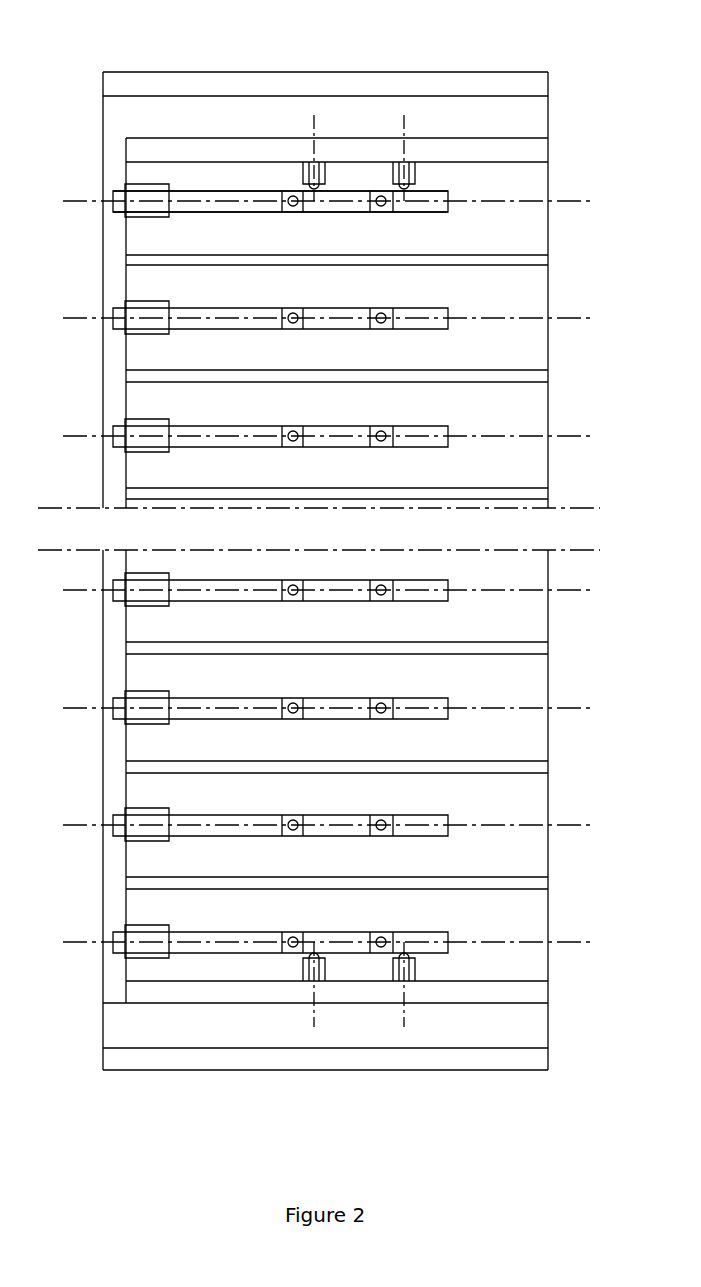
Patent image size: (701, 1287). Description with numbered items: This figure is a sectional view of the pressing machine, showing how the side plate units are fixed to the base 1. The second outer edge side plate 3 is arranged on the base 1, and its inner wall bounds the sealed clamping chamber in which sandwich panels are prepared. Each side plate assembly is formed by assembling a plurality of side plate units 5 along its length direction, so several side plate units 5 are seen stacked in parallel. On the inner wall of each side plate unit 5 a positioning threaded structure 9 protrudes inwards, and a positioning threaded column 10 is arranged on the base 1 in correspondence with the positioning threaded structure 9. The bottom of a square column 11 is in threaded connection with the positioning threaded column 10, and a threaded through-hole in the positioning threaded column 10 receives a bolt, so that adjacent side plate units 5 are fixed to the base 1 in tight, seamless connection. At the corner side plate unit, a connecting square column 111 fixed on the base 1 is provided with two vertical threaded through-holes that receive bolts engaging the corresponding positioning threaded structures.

The base 1 is at (112, 405).
The second outer edge side plate 3 is at (249, 86).
The side plate unit 5 is at (455, 150).
The positioning threaded structure 9 is at (322, 170).
The positioning threaded column 10 is at (133, 187).
The square column 11 is at (235, 311).
The connecting square column 111 is at (235, 193).